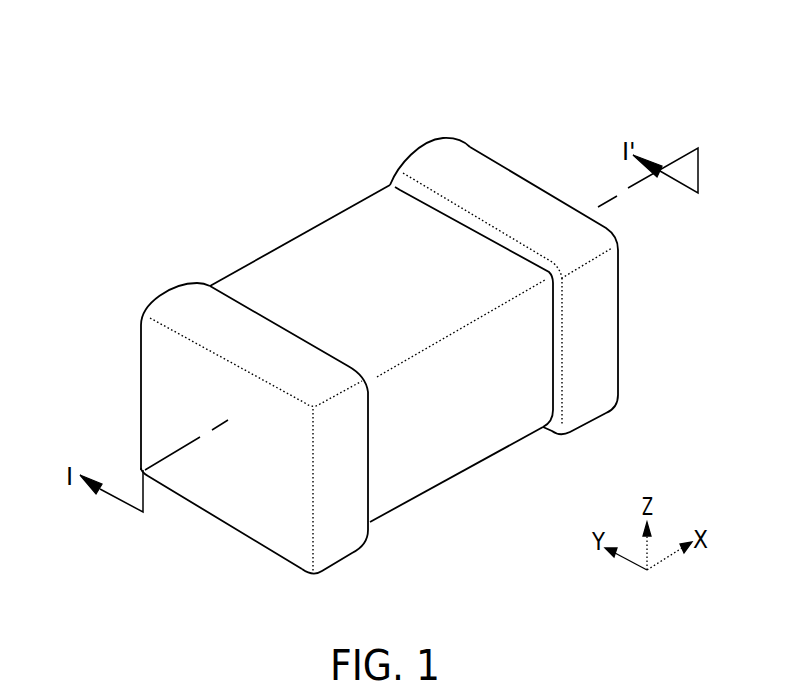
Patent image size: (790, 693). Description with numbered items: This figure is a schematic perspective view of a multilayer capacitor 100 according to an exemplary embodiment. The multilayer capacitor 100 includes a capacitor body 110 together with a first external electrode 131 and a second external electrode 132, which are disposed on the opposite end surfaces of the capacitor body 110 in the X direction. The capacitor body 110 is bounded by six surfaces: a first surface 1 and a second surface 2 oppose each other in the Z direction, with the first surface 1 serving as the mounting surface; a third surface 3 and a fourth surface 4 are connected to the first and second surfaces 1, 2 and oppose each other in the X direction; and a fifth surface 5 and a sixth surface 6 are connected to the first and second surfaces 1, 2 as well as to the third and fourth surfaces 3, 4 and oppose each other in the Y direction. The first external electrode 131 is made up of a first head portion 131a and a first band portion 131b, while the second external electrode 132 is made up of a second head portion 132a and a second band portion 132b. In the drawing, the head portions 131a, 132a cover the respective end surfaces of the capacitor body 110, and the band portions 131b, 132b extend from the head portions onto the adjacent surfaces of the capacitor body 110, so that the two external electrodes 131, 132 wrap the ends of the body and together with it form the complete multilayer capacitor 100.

The multilayer capacitor 100 is at (233, 79).
The capacitor body 110 is at (320, 250).
The first surface 1 is at (398, 480).
The second surface 2 is at (369, 233).
The third surface 3 is at (245, 507).
The fourth surface 4 is at (586, 298).
The fifth surface 5 is at (475, 433).
The sixth surface 6 is at (295, 280).
The first external electrode 131 is at (140, 212).
The first head portion 131a is at (153, 363).
The first band portion 131b is at (178, 303).
The second external electrode 132 is at (443, 43).
The second head portion 132a is at (485, 152).
The second band portion 132b is at (425, 162).